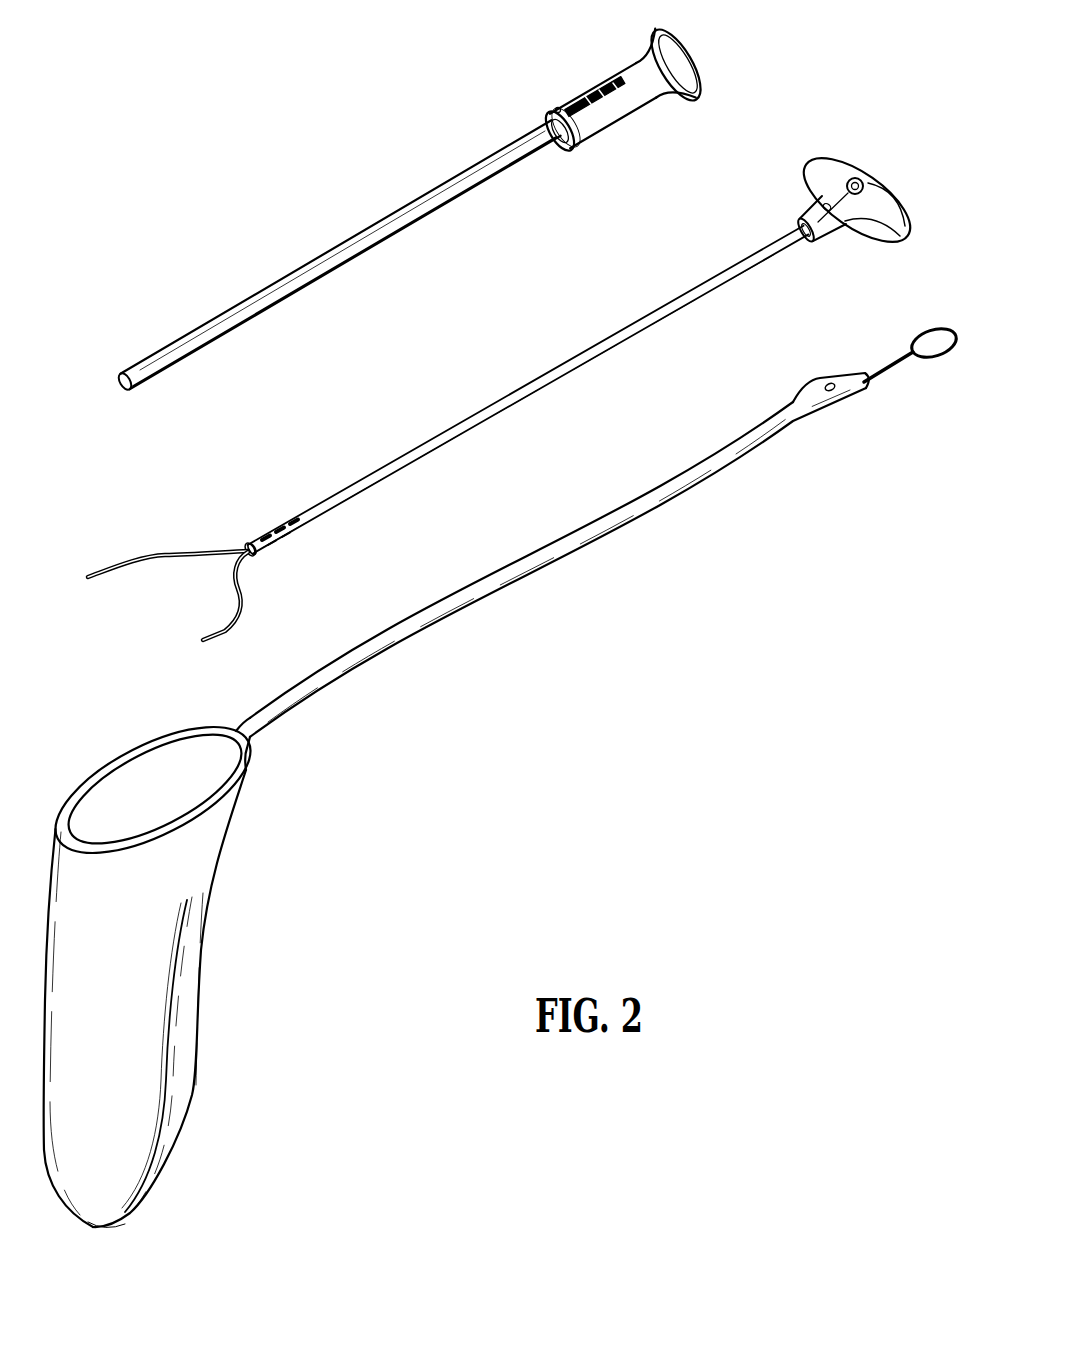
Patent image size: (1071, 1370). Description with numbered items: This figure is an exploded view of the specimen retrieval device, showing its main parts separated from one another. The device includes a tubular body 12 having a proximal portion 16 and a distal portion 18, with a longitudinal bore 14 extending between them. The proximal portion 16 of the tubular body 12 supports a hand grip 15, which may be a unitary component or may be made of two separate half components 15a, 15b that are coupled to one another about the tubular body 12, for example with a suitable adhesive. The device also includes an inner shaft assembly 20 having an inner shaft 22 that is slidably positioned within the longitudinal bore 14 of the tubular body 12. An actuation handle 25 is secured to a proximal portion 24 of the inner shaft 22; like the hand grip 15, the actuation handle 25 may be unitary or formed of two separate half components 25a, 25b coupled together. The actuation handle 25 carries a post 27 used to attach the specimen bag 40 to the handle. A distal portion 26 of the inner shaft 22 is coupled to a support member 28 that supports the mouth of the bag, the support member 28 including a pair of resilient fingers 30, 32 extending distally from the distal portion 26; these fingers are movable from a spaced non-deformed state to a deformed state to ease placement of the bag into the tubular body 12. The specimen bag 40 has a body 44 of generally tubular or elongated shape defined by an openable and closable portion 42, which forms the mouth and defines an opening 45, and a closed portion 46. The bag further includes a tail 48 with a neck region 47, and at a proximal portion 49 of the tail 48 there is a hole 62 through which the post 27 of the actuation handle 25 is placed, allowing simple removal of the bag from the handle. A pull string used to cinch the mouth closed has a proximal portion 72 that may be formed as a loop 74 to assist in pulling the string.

The tubular body 12 is at (332, 256).
The longitudinal bore 14 is at (118, 380).
The hand grip 15 is at (656, 73).
The half component 15a is at (687, 66).
The half component 15b is at (690, 84).
The proximal portion 16 is at (638, 87).
The distal portion 18 is at (138, 370).
The inner shaft assembly 20 is at (517, 395).
The inner shaft 22 is at (430, 440).
The proximal portion 24 is at (857, 202).
The actuation handle 25 is at (868, 202).
The half component 25a is at (887, 216).
The half component 25b is at (892, 238).
The distal portion 26 is at (286, 524).
The post 27 is at (856, 178).
The support member 28 is at (247, 551).
The resilient finger 30 is at (133, 555).
The resilient finger 32 is at (215, 636).
The specimen bag 40 is at (498, 792).
The openable and closable portion 42 is at (153, 982).
The body 44 is at (73, 1023).
The opening 45 is at (122, 788).
The closed portion 46 is at (93, 1228).
The neck region 47 is at (293, 710).
The tail 48 is at (598, 559).
The proximal portion of the tail 49 is at (825, 358).
The hole 62 is at (826, 384).
The proximal portion of the pull string 72 is at (912, 364).
The loop 74 is at (936, 358).